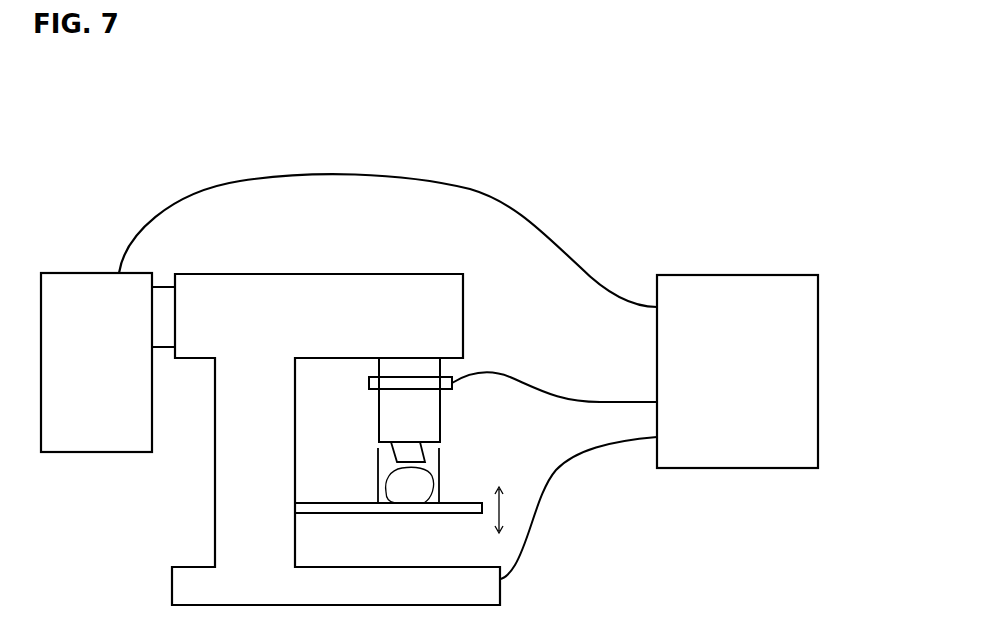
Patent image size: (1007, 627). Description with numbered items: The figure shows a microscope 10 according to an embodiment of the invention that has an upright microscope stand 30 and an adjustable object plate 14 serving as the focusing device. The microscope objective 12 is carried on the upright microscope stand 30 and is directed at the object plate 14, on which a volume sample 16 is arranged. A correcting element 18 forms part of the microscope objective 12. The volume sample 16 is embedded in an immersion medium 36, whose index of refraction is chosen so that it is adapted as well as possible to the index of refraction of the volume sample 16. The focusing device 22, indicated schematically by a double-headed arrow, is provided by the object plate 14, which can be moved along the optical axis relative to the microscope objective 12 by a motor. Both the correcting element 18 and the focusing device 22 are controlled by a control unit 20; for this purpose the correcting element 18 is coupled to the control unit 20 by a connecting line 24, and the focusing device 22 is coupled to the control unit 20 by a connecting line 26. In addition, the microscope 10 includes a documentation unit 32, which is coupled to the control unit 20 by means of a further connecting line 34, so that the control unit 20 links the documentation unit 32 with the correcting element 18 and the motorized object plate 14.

The microscope 10 is at (632, 155).
The microscope objective 12 is at (385, 414).
The object plate 14 is at (457, 503).
The volume sample 16 is at (390, 490).
The correcting element 18 is at (404, 383).
The control unit 20 is at (738, 285).
The focusing device 22 is at (500, 508).
The connecting line 24 is at (577, 401).
The connecting line 26 is at (612, 440).
The upright microscope stand 30 is at (222, 498).
The documentation unit 32 is at (89, 283).
The connecting line 34 is at (463, 186).
The immersion medium 36 is at (395, 462).